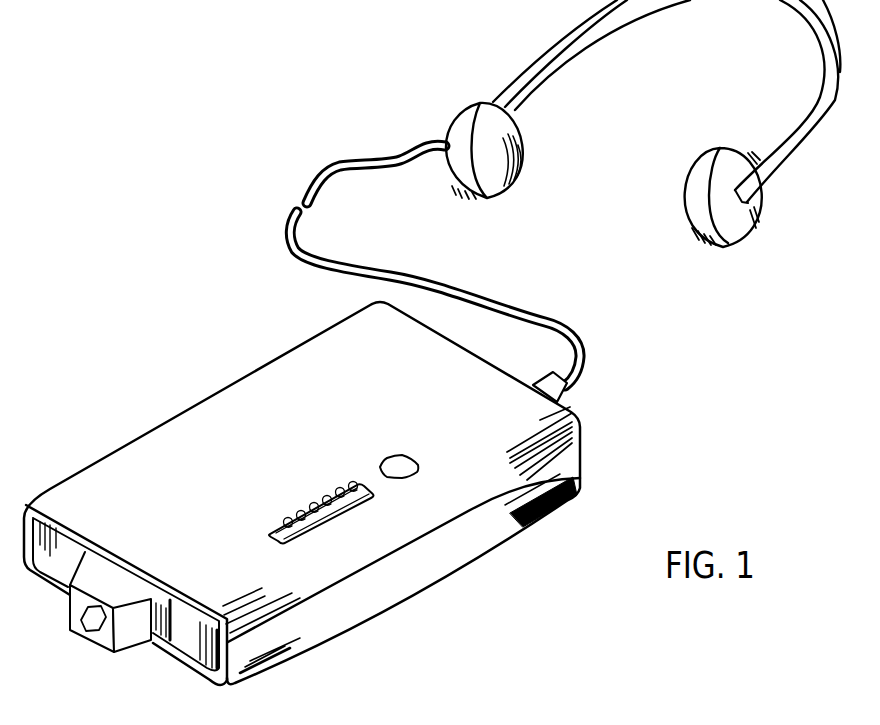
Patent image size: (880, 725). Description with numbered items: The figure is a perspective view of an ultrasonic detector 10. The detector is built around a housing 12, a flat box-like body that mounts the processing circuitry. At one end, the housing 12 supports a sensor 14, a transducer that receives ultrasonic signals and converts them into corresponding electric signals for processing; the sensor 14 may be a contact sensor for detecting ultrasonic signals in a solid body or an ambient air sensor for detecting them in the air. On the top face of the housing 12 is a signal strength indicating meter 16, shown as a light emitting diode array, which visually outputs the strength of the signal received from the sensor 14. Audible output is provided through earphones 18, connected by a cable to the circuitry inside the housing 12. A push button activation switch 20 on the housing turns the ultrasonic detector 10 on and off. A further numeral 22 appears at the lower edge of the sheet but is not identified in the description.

The ultrasonic detector 10 is at (275, 343).
The housing 12 is at (515, 412).
The sensor 14 is at (88, 655).
The signal strength indicating meter 16 is at (337, 517).
The earphones 18 is at (562, 23).
The push button activation switch 20 is at (407, 470).
The bottom element (cut off) 22 is at (443, 721).